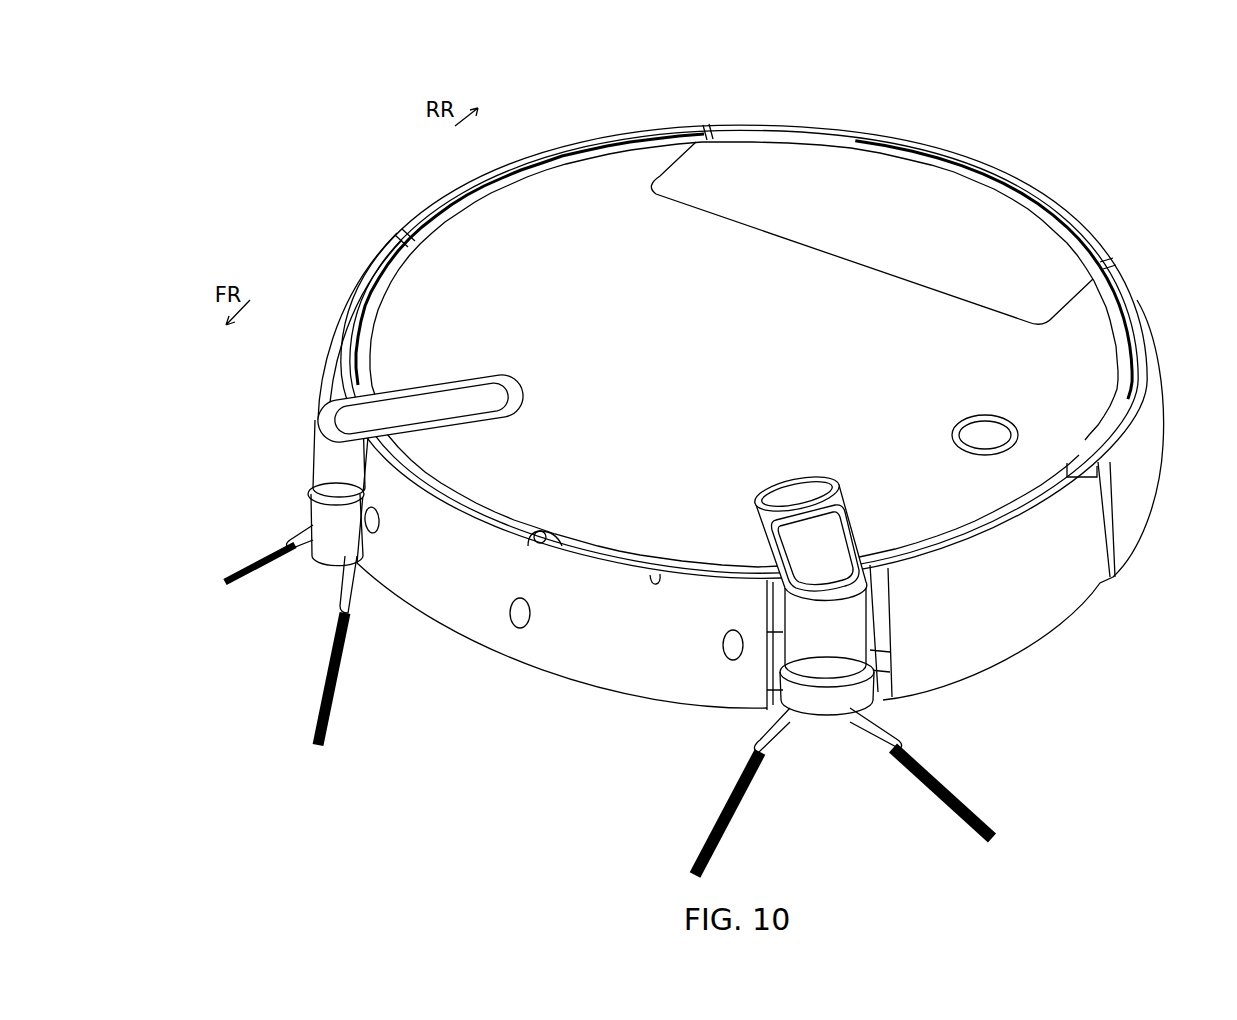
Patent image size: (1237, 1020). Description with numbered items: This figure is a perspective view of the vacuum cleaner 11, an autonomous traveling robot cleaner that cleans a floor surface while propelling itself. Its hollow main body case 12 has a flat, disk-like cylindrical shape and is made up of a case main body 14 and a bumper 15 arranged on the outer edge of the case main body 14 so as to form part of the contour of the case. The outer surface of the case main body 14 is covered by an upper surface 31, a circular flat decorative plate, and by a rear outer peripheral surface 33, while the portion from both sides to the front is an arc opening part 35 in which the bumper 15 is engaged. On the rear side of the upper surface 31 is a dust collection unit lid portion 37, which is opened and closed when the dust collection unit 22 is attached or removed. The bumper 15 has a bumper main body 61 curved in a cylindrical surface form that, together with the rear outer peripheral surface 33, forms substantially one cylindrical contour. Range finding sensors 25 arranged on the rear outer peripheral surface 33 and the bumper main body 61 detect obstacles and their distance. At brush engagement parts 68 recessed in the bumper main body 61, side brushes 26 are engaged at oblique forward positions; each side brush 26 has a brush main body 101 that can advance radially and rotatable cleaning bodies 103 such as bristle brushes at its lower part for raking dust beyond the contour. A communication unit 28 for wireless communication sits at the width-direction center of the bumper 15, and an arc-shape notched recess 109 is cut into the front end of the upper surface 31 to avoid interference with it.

The vacuum cleaner 11 is at (954, 114).
The main body case 12 is at (1108, 318).
The case main body 14 is at (612, 178).
The bumper 15 is at (578, 672).
The dust collection unit 22 is at (1030, 222).
The range finding sensor 25 is at (362, 528).
The side brush 26 is at (289, 489).
The communication unit 28 is at (540, 531).
The upper surface 31 is at (1114, 348).
The rear outer peripheral surface 33 is at (1158, 422).
The arc opening part 35 is at (656, 573).
The dust collection unit lid portion 37 is at (988, 205).
The bumper main body 61 is at (627, 686).
The brush engagement part 68 is at (378, 450).
The brush main body 101 is at (320, 453).
The cleaning body 103 is at (245, 573).
The arc-shape notched recess 109 is at (556, 535).